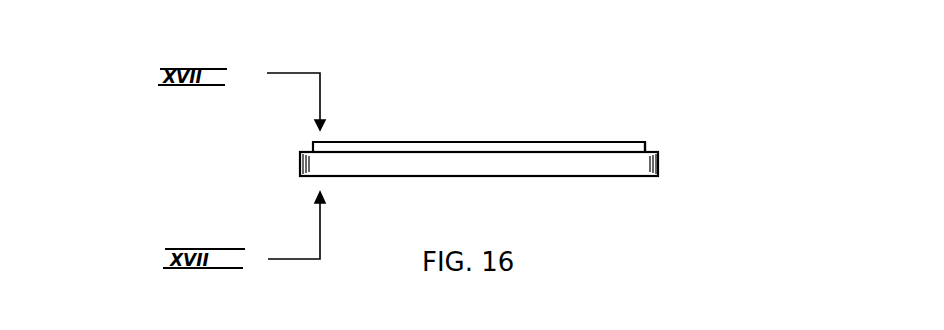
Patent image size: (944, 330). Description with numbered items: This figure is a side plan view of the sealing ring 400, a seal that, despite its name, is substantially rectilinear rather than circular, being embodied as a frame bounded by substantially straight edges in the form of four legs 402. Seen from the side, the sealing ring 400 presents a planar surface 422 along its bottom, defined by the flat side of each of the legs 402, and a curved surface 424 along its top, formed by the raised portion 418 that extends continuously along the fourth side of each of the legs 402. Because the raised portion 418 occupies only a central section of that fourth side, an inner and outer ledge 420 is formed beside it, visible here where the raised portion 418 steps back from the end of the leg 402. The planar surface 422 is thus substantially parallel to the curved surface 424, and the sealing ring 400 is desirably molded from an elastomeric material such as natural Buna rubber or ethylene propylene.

The sealing ring 400 is at (565, 152).
The leg 402 is at (570, 167).
The raised portion 418 is at (467, 143).
The ledge 420 is at (657, 140).
The planar surface 422 is at (372, 186).
The curved surface 424 is at (387, 134).